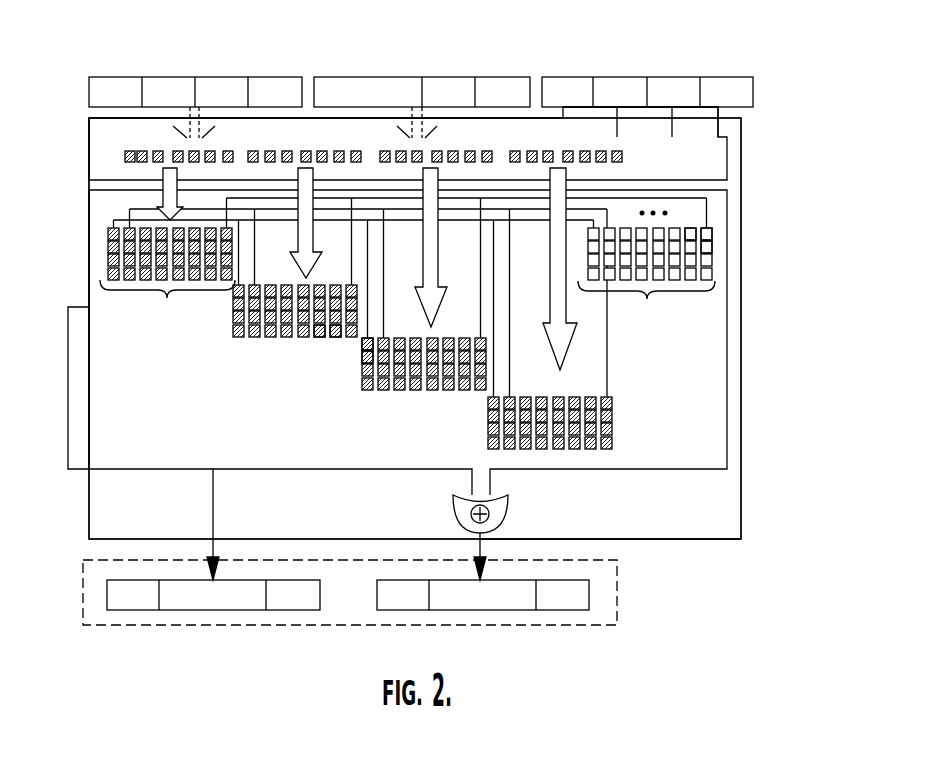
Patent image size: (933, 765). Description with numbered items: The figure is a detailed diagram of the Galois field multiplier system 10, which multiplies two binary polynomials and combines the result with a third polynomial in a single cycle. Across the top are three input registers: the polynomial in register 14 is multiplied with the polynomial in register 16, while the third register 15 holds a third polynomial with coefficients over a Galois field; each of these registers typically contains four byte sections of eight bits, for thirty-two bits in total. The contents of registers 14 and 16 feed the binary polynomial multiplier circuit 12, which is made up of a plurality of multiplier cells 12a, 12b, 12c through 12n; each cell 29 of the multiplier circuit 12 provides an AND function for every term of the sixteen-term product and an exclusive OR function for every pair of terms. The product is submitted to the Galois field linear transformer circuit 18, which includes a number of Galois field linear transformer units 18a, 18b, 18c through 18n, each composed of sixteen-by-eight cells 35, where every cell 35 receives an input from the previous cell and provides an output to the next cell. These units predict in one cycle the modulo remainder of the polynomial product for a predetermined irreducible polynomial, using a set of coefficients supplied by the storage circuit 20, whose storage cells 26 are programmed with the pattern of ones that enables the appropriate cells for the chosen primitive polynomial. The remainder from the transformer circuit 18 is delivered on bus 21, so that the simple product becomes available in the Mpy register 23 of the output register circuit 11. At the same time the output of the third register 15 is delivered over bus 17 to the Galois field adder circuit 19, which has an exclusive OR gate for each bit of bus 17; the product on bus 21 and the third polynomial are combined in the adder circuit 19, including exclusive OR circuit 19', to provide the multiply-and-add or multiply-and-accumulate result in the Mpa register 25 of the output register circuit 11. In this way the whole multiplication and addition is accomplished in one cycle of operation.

The Galois field multiplier system 10 is at (855, 147).
The output register circuit 11 is at (366, 578).
The binary polynomial multiplier circuit 12 is at (741, 132).
The multiplier cell 12a is at (127, 153).
The multiplier cell 12b is at (310, 152).
The multiplier cell 12c is at (437, 155).
The multiplier cell 12n is at (598, 157).
The register 14 is at (228, 76).
The third register 15 is at (687, 75).
The register 16 is at (447, 76).
The bus 17 is at (727, 167).
The Galois field linear transformer circuit 18 is at (690, 233).
The Galois field linear transformer unit 18a is at (110, 262).
The Galois field linear transformer unit 18b is at (240, 337).
The Galois field linear transformer unit 18c is at (362, 395).
The Galois field linear transformer unit 18n is at (488, 430).
The Galois field adder circuit 19 is at (408, 342).
The exclusive OR circuit 19' is at (519, 513).
The storage circuit 20 is at (713, 260).
The bus 21 is at (127, 469).
The Mpy register 23 is at (128, 580).
The Mpa register 25 is at (598, 540).
The storage cell 26 is at (703, 247).
The cell 29 is at (532, 155).
The cell 35 is at (365, 358).